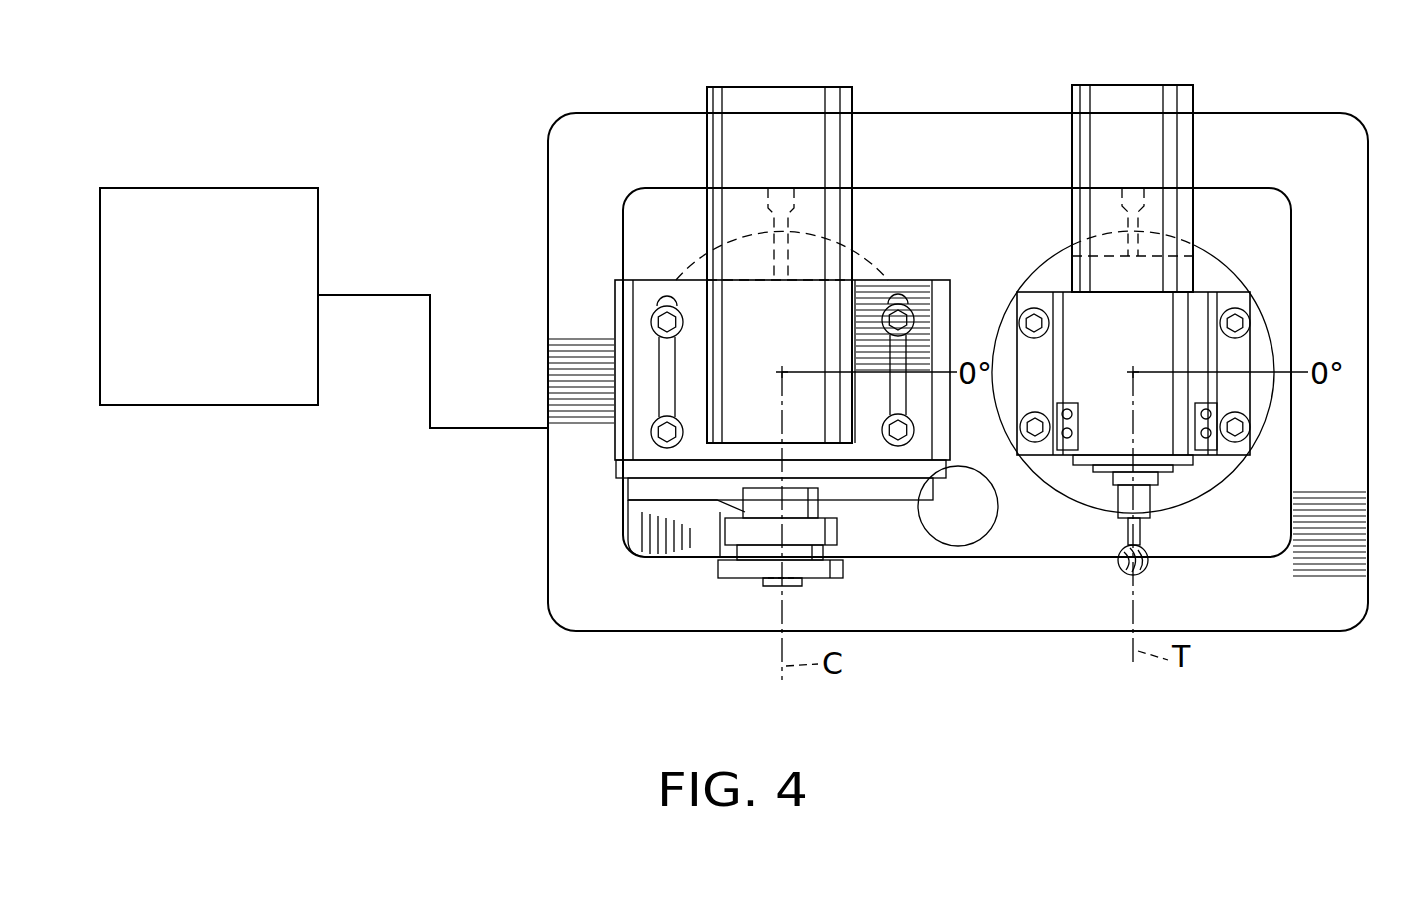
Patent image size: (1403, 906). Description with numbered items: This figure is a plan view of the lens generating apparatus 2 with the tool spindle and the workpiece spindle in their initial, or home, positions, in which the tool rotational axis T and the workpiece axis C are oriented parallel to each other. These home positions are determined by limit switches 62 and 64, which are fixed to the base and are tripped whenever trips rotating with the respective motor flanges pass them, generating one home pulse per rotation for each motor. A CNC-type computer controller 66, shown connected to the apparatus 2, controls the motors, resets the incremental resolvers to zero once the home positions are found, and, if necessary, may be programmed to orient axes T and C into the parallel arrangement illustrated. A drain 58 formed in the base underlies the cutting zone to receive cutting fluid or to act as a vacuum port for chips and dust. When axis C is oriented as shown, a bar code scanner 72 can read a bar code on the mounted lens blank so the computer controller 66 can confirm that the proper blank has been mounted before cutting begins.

The lens generating apparatus 2 is at (656, 73).
The drain 58 is at (985, 521).
The limit switch 62 is at (1141, 188).
The limit switch 64 is at (787, 188).
The computer controller 66 is at (250, 387).
The bar code scanner 72 is at (786, 584).